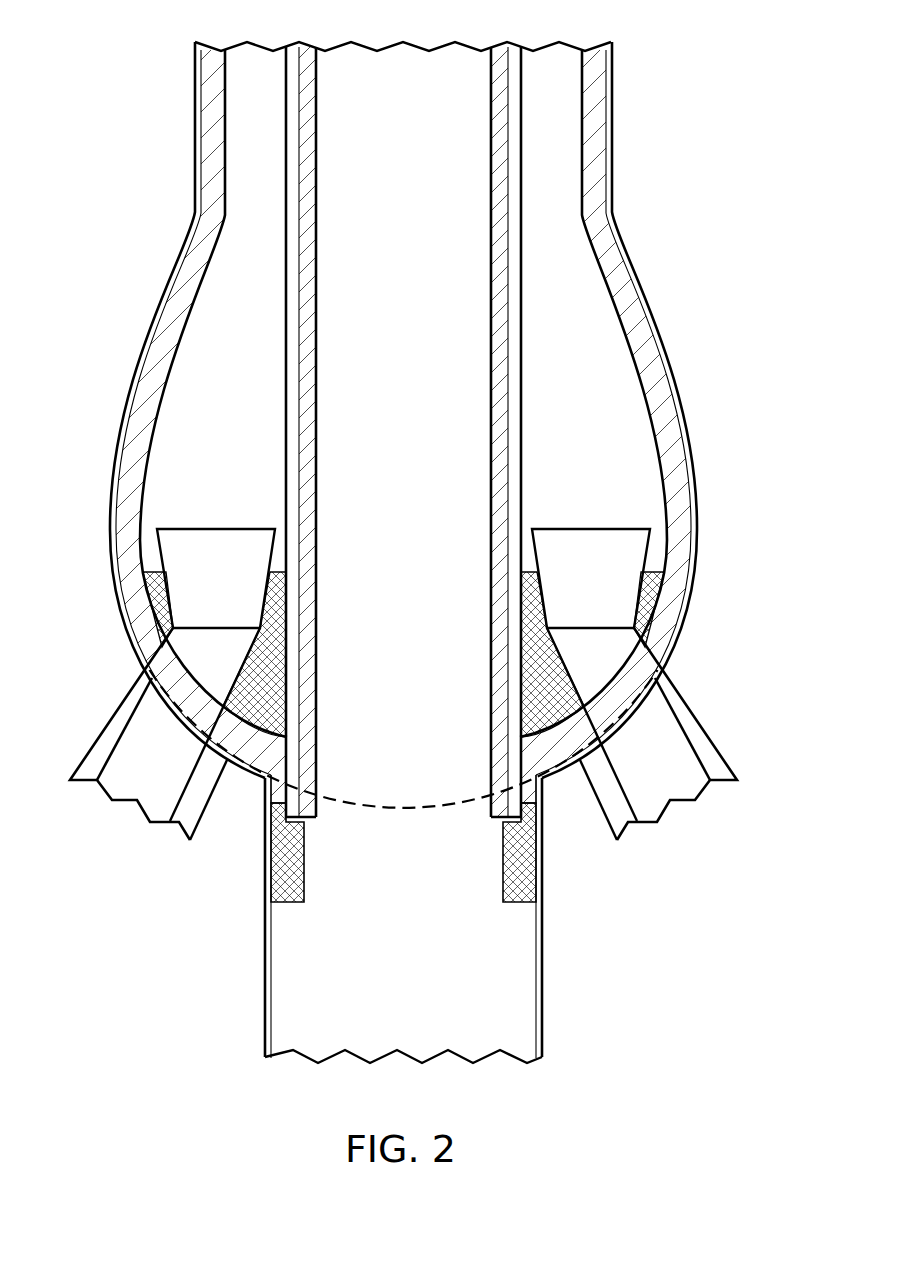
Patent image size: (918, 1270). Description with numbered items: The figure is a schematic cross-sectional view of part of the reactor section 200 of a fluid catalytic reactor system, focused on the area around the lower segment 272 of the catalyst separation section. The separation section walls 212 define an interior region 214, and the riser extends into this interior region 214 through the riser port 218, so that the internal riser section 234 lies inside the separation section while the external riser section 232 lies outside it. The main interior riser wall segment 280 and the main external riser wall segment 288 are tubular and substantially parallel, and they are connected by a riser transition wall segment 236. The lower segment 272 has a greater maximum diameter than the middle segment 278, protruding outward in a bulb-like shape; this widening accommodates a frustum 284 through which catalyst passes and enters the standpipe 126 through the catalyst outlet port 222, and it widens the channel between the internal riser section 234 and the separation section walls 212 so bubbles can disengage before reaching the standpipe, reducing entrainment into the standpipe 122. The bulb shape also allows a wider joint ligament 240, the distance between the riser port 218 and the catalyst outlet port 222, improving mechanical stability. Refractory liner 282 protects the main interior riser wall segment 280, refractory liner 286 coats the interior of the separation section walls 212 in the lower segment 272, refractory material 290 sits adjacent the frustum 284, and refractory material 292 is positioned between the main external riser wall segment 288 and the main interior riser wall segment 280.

The reactor section 200 is at (695, 192).
The separation section walls 212 is at (657, 345).
The interior region 214 is at (590, 338).
The riser port 218 is at (398, 806).
The standpipe 122 is at (106, 708).
The standpipe 126 is at (707, 710).
The catalyst outlet port 222 is at (192, 729).
The external riser section 232 is at (429, 1006).
The internal riser section 234 is at (434, 519).
The riser transition wall segment 236 is at (268, 760).
The joint ligament 240 is at (255, 780).
The lower segment 272 is at (110, 472).
The middle segment 278 is at (195, 109).
The main interior riser wall segment 280 is at (285, 389).
The refractory liner 282 is at (316, 309).
The frustum 284 is at (197, 529).
The refractory liner 286 is at (225, 167).
The main external riser wall segment 288 is at (265, 1014).
The refractory material 290 is at (283, 572).
The refractory material 292 is at (290, 905).